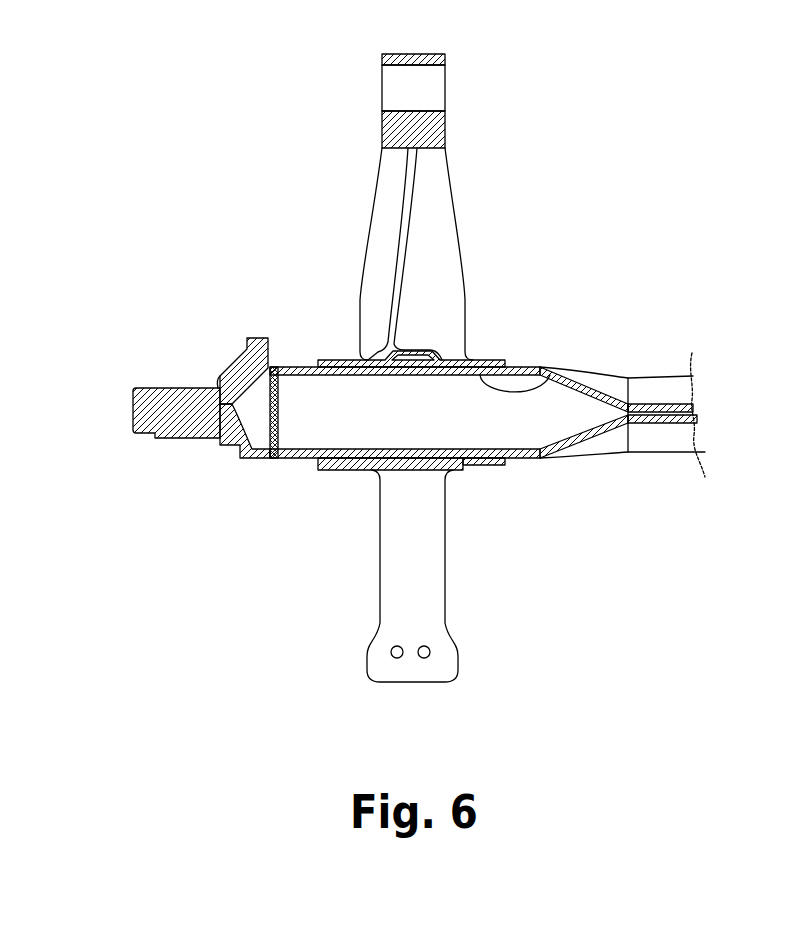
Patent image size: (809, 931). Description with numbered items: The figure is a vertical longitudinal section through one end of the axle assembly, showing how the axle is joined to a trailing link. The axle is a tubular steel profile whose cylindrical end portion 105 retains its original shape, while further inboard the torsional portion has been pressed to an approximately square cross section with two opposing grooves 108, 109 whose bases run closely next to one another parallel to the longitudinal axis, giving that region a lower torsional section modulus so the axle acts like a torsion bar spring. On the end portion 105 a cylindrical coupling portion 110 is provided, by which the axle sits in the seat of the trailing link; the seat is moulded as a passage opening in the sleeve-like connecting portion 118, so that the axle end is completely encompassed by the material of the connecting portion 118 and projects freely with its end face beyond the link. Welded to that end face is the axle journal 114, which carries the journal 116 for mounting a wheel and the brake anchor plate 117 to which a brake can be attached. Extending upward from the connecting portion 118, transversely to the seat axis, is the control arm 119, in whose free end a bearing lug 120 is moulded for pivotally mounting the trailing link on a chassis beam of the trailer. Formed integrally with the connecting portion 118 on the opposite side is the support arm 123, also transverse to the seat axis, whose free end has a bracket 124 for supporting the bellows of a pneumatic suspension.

The end portion 105 is at (300, 367).
The groove 108 is at (668, 387).
The groove 109 is at (672, 438).
The coupling portion 110 is at (543, 372).
The axle journal 114 is at (225, 458).
The journal 116 is at (177, 407).
The brake anchor plate 117 is at (247, 347).
The connecting portion 118 is at (338, 362).
The control arm 119 is at (392, 180).
The bearing lug 120 is at (413, 87).
The support arm 123 is at (428, 567).
The bracket 124 is at (380, 663).